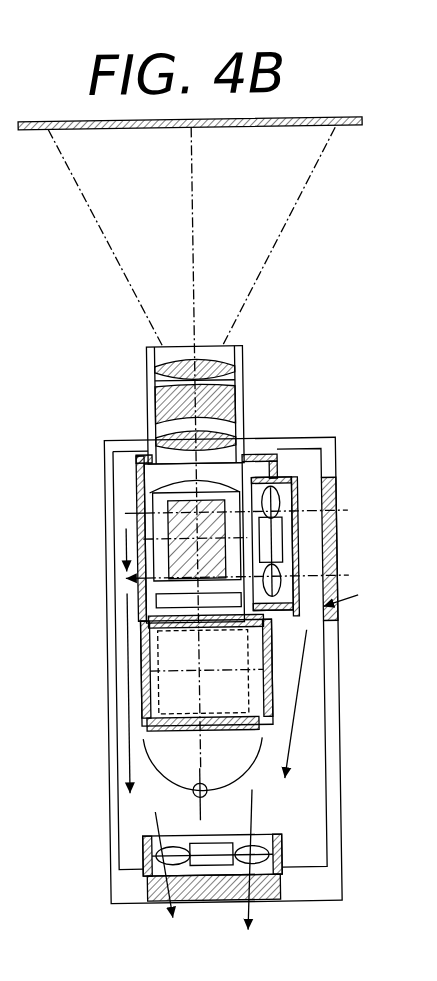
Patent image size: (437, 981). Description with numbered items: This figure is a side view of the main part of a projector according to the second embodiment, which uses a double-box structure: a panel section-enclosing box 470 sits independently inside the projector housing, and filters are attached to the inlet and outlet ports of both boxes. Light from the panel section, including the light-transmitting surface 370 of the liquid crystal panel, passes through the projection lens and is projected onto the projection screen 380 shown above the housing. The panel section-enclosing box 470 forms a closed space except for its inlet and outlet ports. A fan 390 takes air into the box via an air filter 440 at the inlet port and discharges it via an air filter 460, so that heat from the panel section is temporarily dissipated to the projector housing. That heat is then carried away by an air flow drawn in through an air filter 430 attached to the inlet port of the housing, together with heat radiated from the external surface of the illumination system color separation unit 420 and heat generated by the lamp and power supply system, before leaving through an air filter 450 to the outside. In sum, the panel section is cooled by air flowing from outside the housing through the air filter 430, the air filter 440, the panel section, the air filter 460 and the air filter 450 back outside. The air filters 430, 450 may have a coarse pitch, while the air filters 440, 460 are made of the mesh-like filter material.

The projection screen 380 is at (369, 130).
The light-transmitting surface of the liquid crystal panel 370 is at (138, 466).
The air filter 460 is at (137, 494).
The panel section-enclosing box 470 is at (279, 454).
The fan 390 is at (277, 504).
The air filter 430 is at (337, 534).
The air filter 440 is at (339, 604).
The illumination system color separation unit 420 is at (270, 687).
The air filter 450 is at (277, 891).